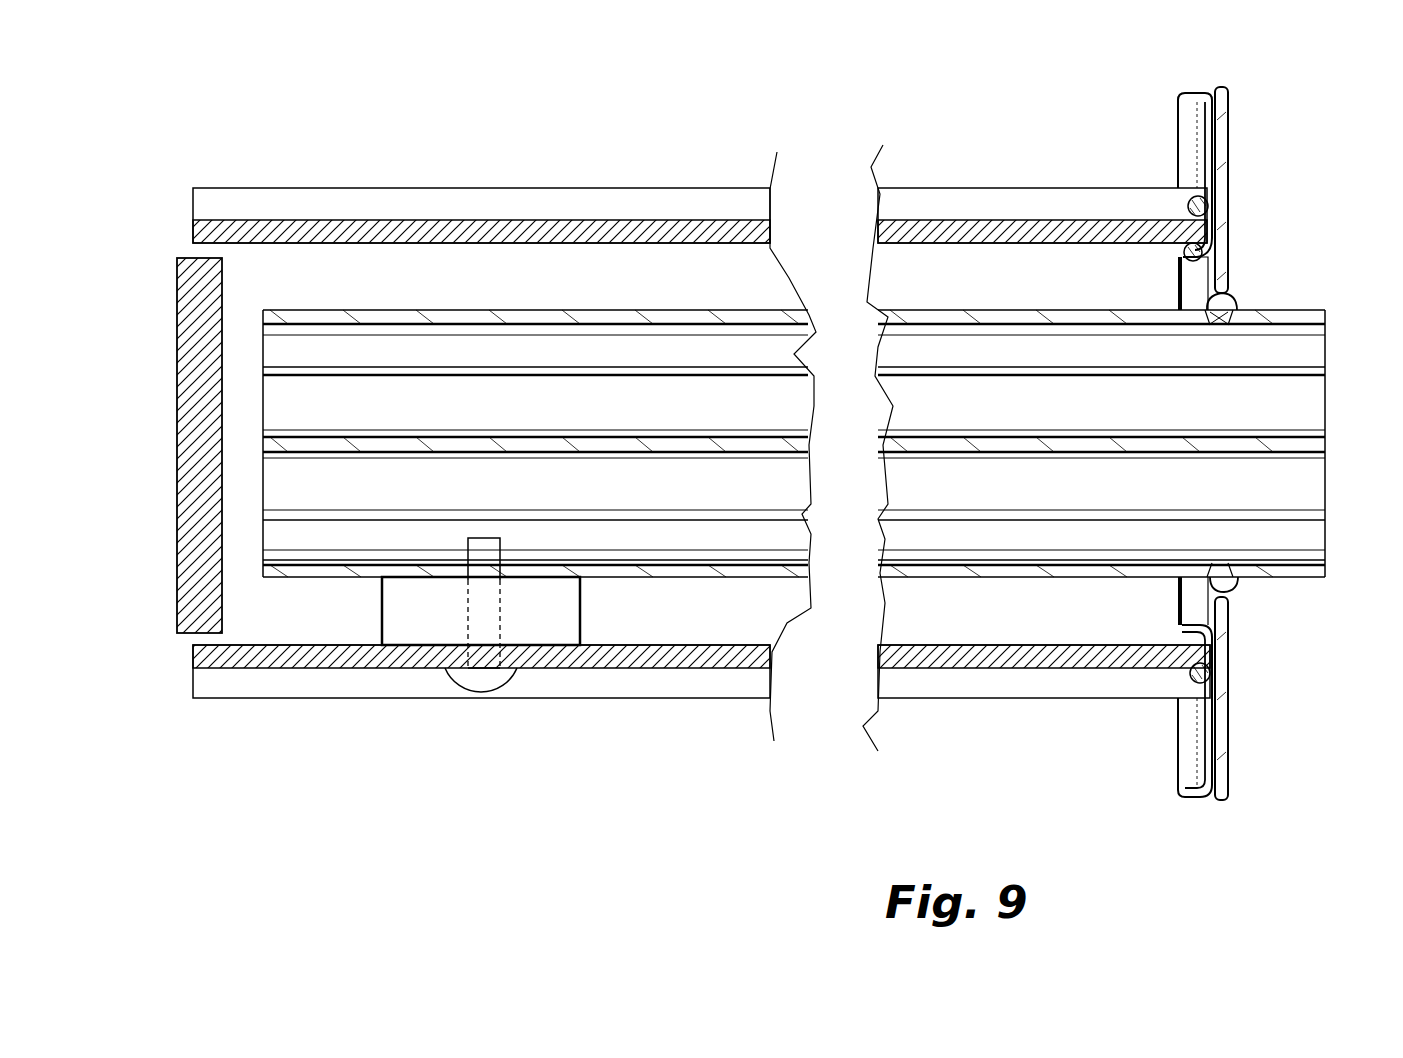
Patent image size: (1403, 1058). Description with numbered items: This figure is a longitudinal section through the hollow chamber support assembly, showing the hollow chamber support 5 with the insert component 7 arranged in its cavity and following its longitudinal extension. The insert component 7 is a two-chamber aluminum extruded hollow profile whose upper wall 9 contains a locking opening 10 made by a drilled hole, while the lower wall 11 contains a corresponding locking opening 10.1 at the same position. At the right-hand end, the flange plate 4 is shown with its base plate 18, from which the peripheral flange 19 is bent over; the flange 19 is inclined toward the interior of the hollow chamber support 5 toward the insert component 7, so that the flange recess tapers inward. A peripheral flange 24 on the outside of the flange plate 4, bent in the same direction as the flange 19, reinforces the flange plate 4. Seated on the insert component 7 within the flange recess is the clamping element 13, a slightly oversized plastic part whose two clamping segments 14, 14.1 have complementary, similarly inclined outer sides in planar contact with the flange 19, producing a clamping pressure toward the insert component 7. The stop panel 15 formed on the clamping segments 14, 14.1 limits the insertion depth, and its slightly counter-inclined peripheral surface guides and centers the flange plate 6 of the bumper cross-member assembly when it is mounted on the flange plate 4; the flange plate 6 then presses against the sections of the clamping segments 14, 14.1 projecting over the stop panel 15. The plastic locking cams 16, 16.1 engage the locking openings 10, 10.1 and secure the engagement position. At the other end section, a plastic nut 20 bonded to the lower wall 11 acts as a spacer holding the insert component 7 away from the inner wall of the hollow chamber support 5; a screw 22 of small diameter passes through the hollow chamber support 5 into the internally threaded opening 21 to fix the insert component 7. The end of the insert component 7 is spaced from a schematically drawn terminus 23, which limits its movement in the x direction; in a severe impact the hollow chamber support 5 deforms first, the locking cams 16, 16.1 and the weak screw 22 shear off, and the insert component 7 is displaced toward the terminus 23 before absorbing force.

The flange plate 4 is at (1233, 153).
The hollow chamber support 5 is at (518, 207).
The flange plate 6 is at (1085, 406).
The insert component 7 is at (633, 300).
The upper wall 9 is at (378, 305).
The locking opening 10 is at (1222, 318).
The locking opening 10.1 is at (1228, 582).
The lower wall 11 is at (635, 580).
The clamping element 13 is at (1163, 270).
The clamping segment 14 is at (1187, 288).
The clamping segment 14.1 is at (1182, 612).
The stop panel 15 is at (1232, 290).
The locking cam 16 is at (1210, 320).
The locking cam 16.1 is at (1217, 562).
The base plate 18 is at (1200, 175).
The flange 19 is at (1197, 247).
The nut 20 is at (481, 611).
The opening 21 is at (502, 560).
The screw 22 is at (480, 680).
The terminus 23 is at (222, 317).
The peripheral flange 24 is at (1190, 92).